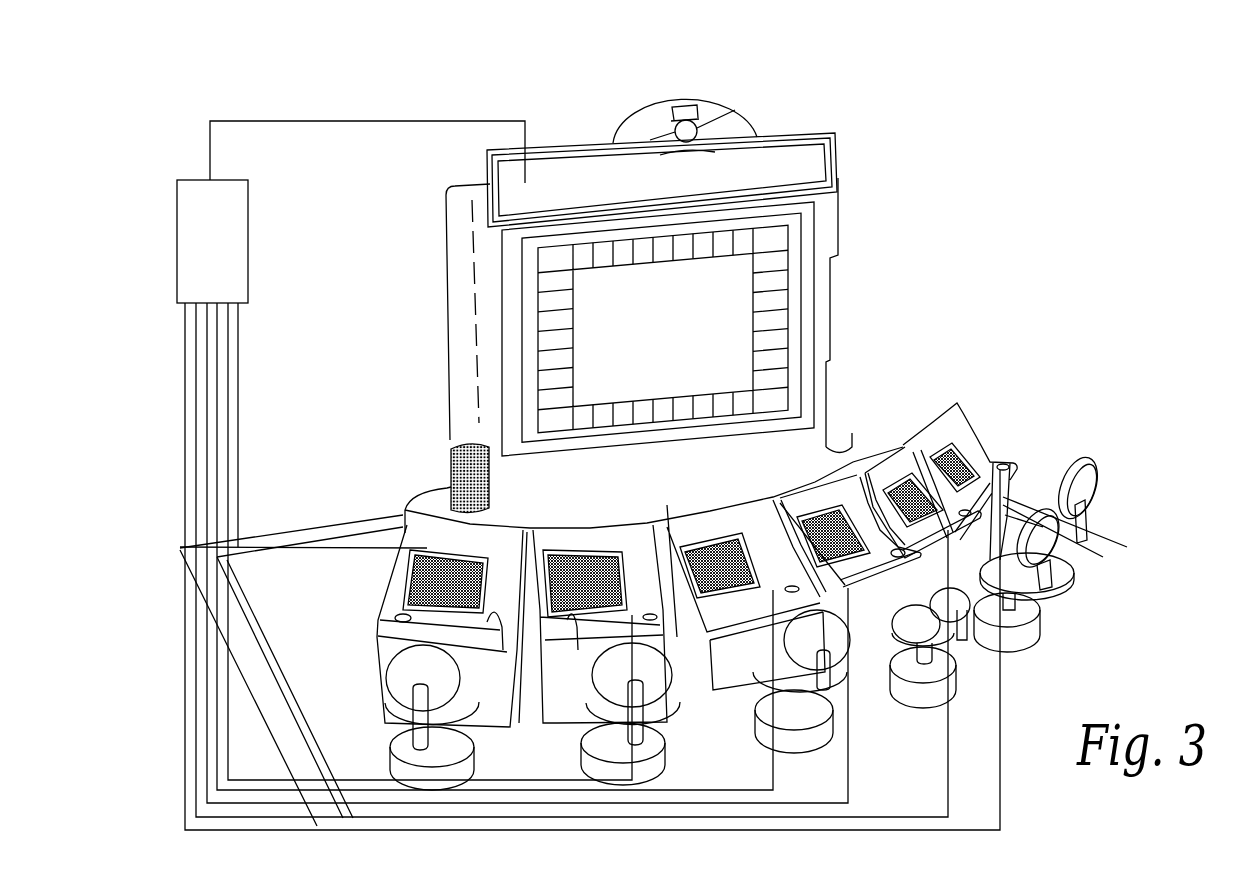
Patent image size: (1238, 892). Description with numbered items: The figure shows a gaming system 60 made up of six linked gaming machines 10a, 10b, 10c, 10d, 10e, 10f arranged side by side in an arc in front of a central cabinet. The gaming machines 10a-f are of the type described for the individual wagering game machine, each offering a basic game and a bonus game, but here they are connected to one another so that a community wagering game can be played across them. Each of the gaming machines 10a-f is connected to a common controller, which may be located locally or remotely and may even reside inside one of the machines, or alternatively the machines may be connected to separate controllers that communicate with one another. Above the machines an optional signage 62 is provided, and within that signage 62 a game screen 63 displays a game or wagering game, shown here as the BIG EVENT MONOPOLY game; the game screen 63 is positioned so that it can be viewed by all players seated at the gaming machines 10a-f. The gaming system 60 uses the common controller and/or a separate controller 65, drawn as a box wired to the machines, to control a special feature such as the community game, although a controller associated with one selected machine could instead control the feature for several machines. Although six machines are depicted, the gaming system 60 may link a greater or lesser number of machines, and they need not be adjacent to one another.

The gaming system 60 is at (935, 231).
The signage 62 is at (813, 128).
The game screen 63 is at (590, 295).
The separate controller 65 is at (177, 209).
The gaming machine 10a is at (510, 530).
The gaming machine 10b is at (557, 530).
The gaming machine 10c is at (725, 603).
The gaming machine 10d is at (860, 607).
The gaming machine 10e is at (905, 443).
The gaming machine 10f is at (995, 463).